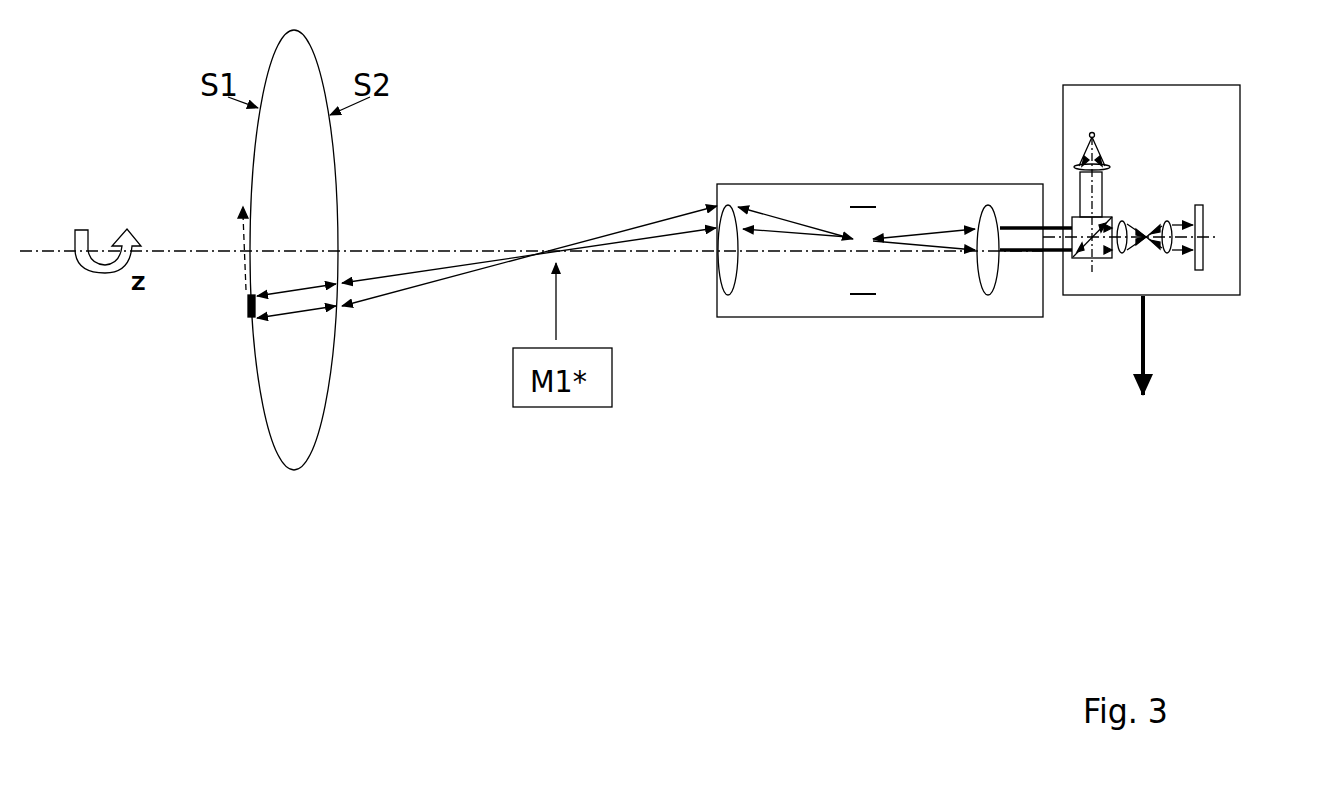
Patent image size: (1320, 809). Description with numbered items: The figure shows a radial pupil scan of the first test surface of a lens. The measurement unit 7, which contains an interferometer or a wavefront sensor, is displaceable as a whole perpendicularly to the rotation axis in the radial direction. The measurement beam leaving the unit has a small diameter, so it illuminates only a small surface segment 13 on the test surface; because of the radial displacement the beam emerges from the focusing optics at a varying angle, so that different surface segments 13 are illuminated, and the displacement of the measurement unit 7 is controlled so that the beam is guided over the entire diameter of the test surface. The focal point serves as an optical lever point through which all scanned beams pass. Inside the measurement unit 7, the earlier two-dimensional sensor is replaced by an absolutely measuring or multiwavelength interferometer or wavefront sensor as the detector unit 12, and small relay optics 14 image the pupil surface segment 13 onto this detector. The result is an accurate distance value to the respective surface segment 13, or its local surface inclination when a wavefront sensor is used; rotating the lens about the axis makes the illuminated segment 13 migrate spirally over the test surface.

The measurement unit 7 is at (1142, 82).
The detector unit 12 is at (1199, 248).
The surface segment 13 is at (240, 308).
The relay optics 14 is at (1122, 220).